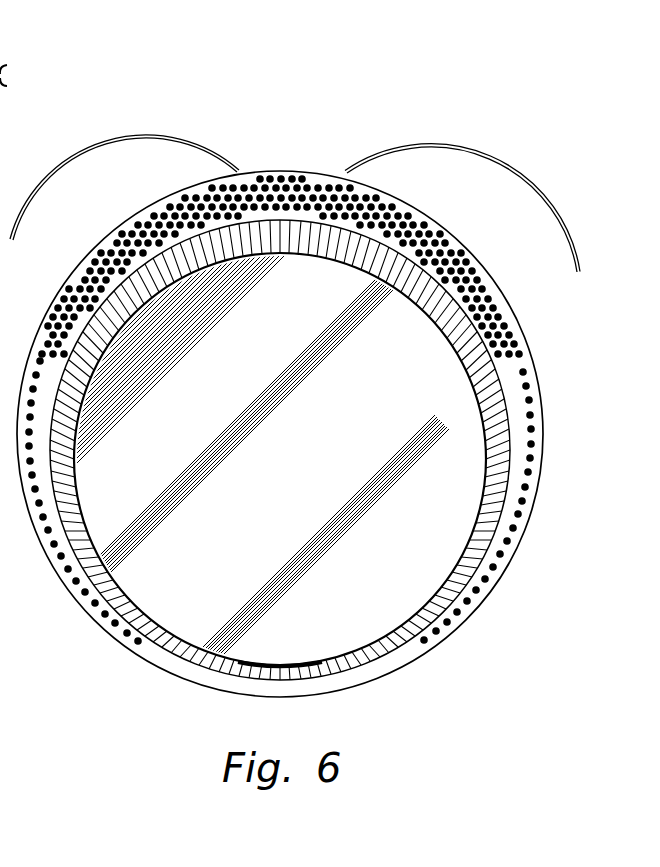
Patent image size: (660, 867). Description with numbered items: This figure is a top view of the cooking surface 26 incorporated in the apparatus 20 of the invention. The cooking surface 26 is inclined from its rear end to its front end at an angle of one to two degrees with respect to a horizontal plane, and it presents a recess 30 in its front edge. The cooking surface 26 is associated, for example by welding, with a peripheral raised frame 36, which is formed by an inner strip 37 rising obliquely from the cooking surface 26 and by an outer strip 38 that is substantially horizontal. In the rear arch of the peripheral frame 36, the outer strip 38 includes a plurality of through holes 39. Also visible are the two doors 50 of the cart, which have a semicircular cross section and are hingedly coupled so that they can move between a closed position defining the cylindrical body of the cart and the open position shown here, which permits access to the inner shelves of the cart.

The apparatus 20 is at (214, 114).
The cooking surface 26 is at (302, 474).
The recess 30 is at (293, 673).
The peripheral raised frame 36 is at (513, 470).
The inner strip 37 is at (478, 358).
The outer strip 38 is at (518, 413).
The through holes 39 is at (315, 177).
The doors 50 is at (95, 148).